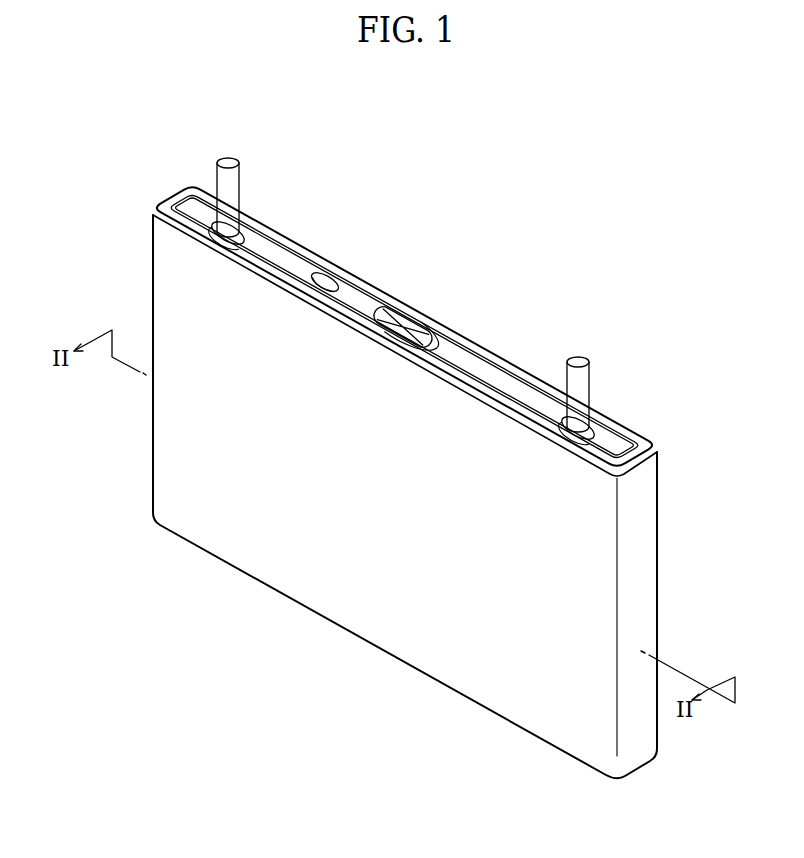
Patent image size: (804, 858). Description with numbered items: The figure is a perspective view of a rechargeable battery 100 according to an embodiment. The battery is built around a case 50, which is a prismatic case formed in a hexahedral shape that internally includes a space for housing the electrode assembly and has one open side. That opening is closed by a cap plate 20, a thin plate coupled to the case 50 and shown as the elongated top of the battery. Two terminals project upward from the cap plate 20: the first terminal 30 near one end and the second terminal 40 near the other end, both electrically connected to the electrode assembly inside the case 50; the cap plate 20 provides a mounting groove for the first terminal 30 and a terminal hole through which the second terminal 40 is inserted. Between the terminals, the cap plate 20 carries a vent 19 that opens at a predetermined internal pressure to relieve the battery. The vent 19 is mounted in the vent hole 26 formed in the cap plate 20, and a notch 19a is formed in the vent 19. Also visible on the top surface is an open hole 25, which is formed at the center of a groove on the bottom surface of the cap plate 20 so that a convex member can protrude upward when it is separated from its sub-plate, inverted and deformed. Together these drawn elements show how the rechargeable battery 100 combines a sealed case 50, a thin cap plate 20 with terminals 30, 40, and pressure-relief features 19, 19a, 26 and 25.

The rechargeable battery 100 is at (459, 173).
The case 50 is at (364, 616).
The cap plate 20 is at (287, 237).
The first terminal 30 is at (225, 160).
The second terminal 40 is at (579, 361).
The open hole 25 is at (322, 278).
The vent 19 is at (386, 317).
The vent hole 26 is at (420, 328).
The notch 19a is at (458, 335).